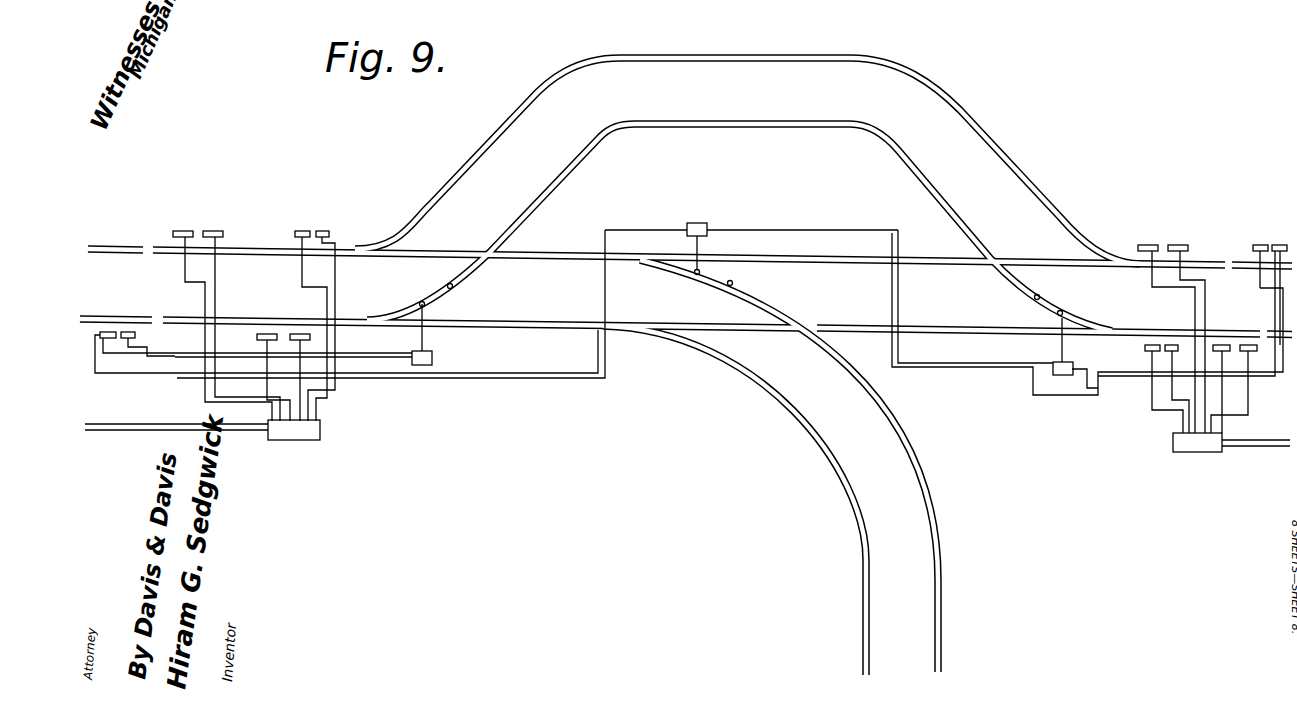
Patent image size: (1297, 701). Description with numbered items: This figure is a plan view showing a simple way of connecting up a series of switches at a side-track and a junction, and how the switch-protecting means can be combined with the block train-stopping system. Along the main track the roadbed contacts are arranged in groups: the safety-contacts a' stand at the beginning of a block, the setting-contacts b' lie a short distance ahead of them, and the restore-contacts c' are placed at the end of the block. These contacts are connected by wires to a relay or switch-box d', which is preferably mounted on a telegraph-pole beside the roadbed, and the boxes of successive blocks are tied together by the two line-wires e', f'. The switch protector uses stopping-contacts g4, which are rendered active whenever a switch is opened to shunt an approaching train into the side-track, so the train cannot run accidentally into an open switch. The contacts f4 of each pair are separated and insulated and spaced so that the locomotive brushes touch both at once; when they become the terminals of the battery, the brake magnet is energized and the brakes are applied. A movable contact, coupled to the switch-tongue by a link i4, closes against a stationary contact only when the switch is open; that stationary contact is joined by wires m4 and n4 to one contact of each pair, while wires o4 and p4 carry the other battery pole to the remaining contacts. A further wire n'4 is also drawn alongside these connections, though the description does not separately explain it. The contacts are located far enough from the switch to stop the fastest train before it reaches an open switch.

The safety-contacts a' is at (742, 319).
The setting-contacts b' is at (733, 319).
The restore-contacts c' is at (731, 325).
The relay or switch-box d' is at (745, 451).
The line-wire e' is at (1256, 462).
The line-wire f' is at (1249, 468).
The contacts f4 is at (134, 331).
The stopping-contacts g4 is at (1280, 245).
The link i4 is at (438, 300).
The wire m4 is at (945, 366).
The wire n4 is at (503, 380).
The wire n'4 is at (293, 365).
The wire o4 is at (359, 356).
The wire p4 is at (958, 370).